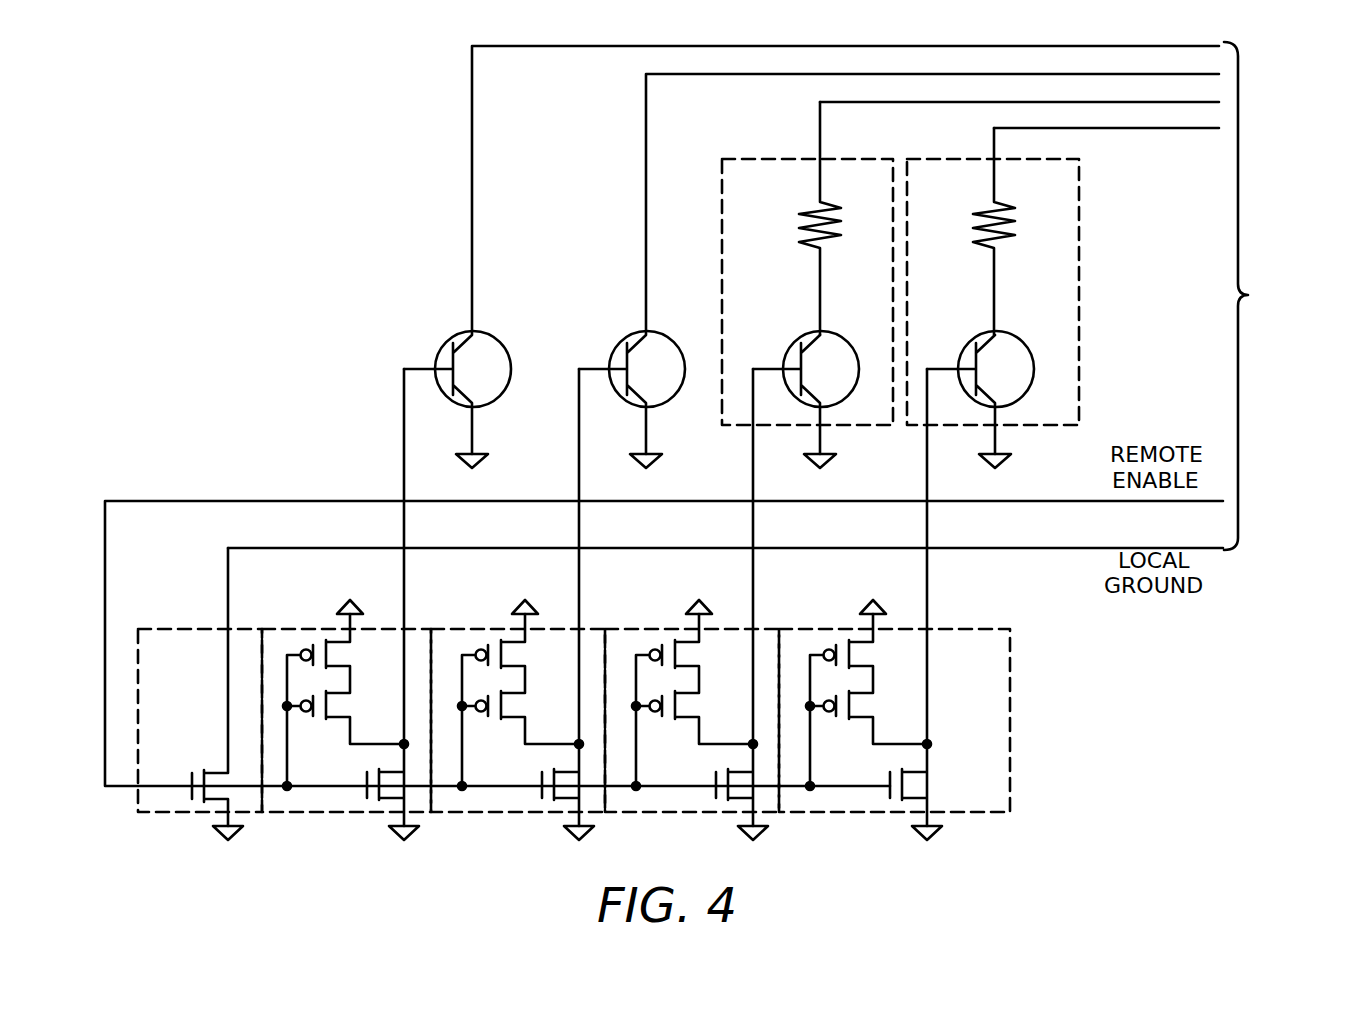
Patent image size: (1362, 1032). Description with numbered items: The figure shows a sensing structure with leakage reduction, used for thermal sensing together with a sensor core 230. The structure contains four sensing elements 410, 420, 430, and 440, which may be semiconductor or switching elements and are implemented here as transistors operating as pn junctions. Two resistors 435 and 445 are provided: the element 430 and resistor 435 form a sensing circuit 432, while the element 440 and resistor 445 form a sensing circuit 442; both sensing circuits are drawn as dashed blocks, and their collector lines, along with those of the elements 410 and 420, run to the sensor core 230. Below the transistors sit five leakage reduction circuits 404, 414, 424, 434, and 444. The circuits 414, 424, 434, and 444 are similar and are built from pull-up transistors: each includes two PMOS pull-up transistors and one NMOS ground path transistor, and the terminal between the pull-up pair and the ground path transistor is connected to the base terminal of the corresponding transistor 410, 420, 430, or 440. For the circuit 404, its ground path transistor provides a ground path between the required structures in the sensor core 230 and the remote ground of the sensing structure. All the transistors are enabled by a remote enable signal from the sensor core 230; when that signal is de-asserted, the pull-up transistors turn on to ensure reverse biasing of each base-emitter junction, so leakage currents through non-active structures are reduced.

The sensor core 230 is at (1283, 296).
The leakage reduction circuit 404 is at (162, 634).
The element 410 is at (443, 350).
The leakage reduction circuit 414 is at (279, 634).
The element 420 is at (617, 350).
The leakage reduction circuit 424 is at (451, 634).
The element 430 is at (791, 350).
The sensing circuit 432 is at (737, 170).
The leakage reduction circuit 434 is at (624, 634).
The resistor 435 is at (839, 218).
The element 440 is at (1012, 341).
The sensing circuit 442 is at (925, 170).
The leakage reduction circuit 444 is at (816, 634).
The resistor 445 is at (1014, 231).